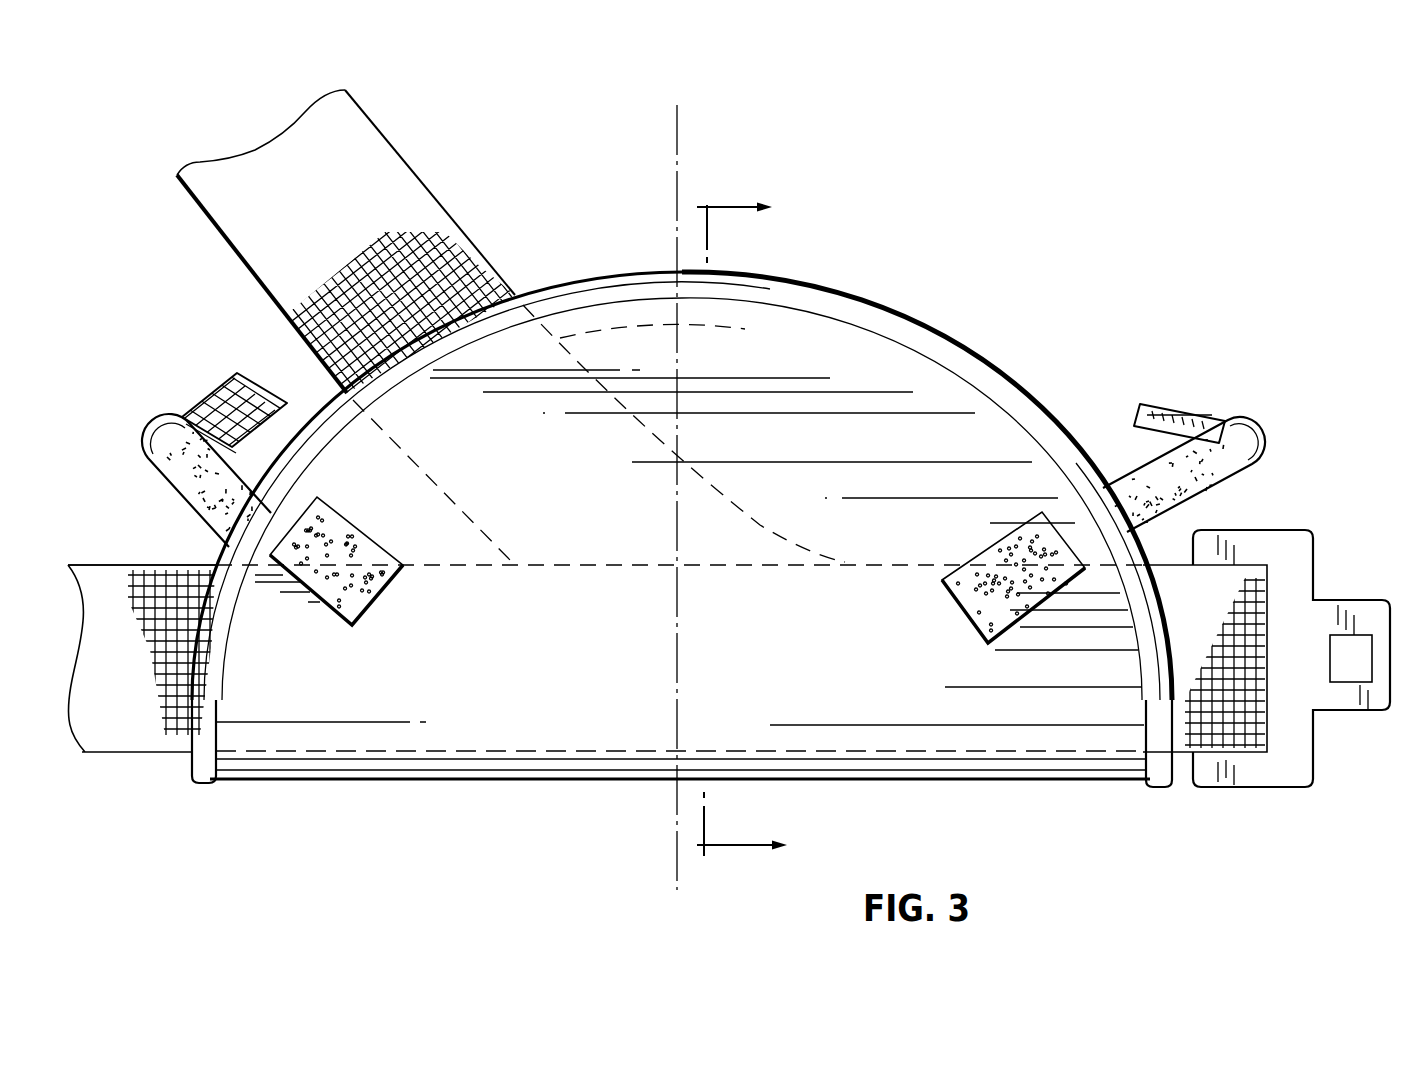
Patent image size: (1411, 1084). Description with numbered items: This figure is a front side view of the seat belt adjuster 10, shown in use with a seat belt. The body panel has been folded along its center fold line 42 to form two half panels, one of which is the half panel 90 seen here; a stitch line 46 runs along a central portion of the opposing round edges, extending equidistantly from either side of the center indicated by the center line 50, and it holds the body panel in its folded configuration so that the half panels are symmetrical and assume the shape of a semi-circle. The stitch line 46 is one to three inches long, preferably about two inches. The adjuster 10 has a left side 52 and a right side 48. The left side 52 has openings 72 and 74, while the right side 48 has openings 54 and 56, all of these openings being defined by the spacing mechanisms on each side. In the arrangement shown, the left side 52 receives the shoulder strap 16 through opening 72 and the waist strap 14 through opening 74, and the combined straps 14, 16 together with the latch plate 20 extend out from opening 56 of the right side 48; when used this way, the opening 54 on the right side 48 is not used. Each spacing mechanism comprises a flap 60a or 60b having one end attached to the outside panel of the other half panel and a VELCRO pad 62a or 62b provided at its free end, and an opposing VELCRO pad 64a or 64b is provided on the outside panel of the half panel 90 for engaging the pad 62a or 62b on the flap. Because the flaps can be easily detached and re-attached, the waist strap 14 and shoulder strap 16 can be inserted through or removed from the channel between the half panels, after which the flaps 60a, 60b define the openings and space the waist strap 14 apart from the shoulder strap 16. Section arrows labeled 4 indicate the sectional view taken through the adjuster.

The seat belt adjuster 10 is at (826, 821).
The waist strap 14 is at (150, 740).
The shoulder strap 16 is at (412, 193).
The latch plate 20 is at (1313, 712).
The center fold line 42 is at (416, 780).
The stitch line 46 is at (737, 330).
The right side 48 is at (848, 160).
The center line 50 is at (688, 152).
The left side 52 is at (565, 162).
The opening 54 is at (1068, 366).
The opening 56 is at (1175, 535).
The flap 60a is at (183, 417).
The flap 60b is at (1160, 402).
The VELCRO pad 62a is at (262, 444).
The VELCRO pad 62b is at (1190, 470).
The opposing VELCRO pad 64a is at (375, 580).
The opposing VELCRO pad 64b is at (984, 600).
The opening 72 is at (302, 368).
The opening 74 is at (178, 524).
The half panel 90 is at (938, 392).
The section line 4- 4 is at (742, 532).